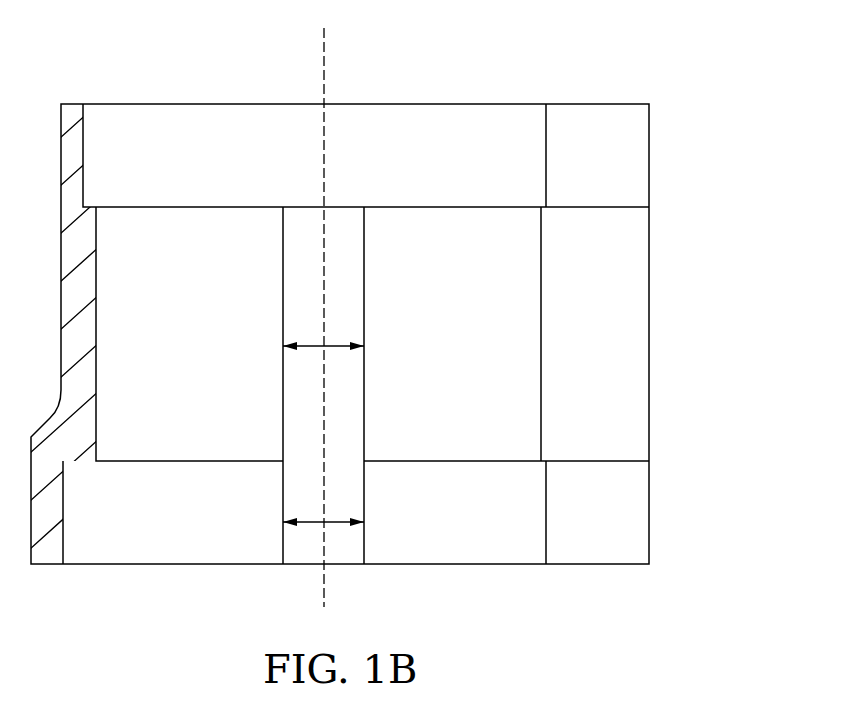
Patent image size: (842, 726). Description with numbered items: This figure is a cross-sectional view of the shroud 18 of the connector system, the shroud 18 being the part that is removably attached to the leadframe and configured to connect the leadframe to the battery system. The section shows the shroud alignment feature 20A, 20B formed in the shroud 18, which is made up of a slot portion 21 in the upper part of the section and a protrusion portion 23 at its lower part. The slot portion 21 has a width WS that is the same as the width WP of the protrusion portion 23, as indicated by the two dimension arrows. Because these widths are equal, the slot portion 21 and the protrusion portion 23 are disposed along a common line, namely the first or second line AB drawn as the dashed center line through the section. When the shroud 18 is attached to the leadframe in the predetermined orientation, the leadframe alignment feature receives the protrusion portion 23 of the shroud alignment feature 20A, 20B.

The shroud 18 is at (359, 307).
The shroud alignment feature 20A is at (342, 214).
The shroud alignment feature 20B is at (372, 370).
The slot portion 21 is at (435, 207).
The protrusion portion 23 is at (435, 461).
The width of the slot portion WS is at (306, 344).
The width of the protrusion portion WP is at (306, 520).
The first line and second line AB is at (322, 67).